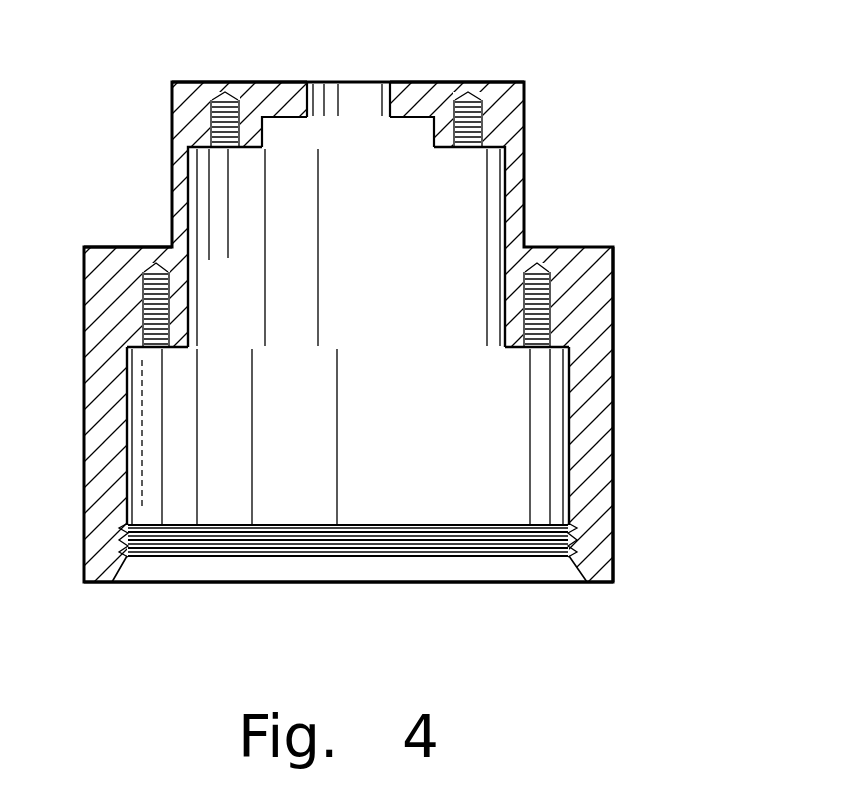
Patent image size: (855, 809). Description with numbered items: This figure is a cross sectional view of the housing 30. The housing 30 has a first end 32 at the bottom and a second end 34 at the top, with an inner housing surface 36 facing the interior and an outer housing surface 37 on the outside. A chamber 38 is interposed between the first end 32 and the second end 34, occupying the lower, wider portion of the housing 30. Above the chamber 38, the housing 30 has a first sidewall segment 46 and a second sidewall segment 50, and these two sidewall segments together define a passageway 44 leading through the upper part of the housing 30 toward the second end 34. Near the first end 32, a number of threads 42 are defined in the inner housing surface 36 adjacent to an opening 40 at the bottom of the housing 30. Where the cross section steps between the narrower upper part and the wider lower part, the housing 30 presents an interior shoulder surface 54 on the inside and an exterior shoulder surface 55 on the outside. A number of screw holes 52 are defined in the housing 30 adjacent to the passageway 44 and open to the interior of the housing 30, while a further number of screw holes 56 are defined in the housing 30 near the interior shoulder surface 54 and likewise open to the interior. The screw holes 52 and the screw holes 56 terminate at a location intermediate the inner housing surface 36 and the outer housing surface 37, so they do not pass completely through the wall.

The housing 30 is at (683, 106).
The first end 32 is at (348, 585).
The second end 34 is at (428, 82).
The inner housing surface 36 is at (146, 464).
The outer housing surface 37 is at (615, 357).
The chamber 38 is at (148, 406).
The opening 40 is at (561, 585).
The threads 42 is at (200, 537).
The passageway 44 is at (416, 131).
The first sidewall segment 46 is at (283, 128).
The second sidewall segment 50 is at (353, 97).
The screw holes 52 is at (245, 90).
The interior shoulder surface 54 is at (178, 348).
The exterior shoulder surface 55 is at (128, 247).
The screw holes 56 is at (538, 268).